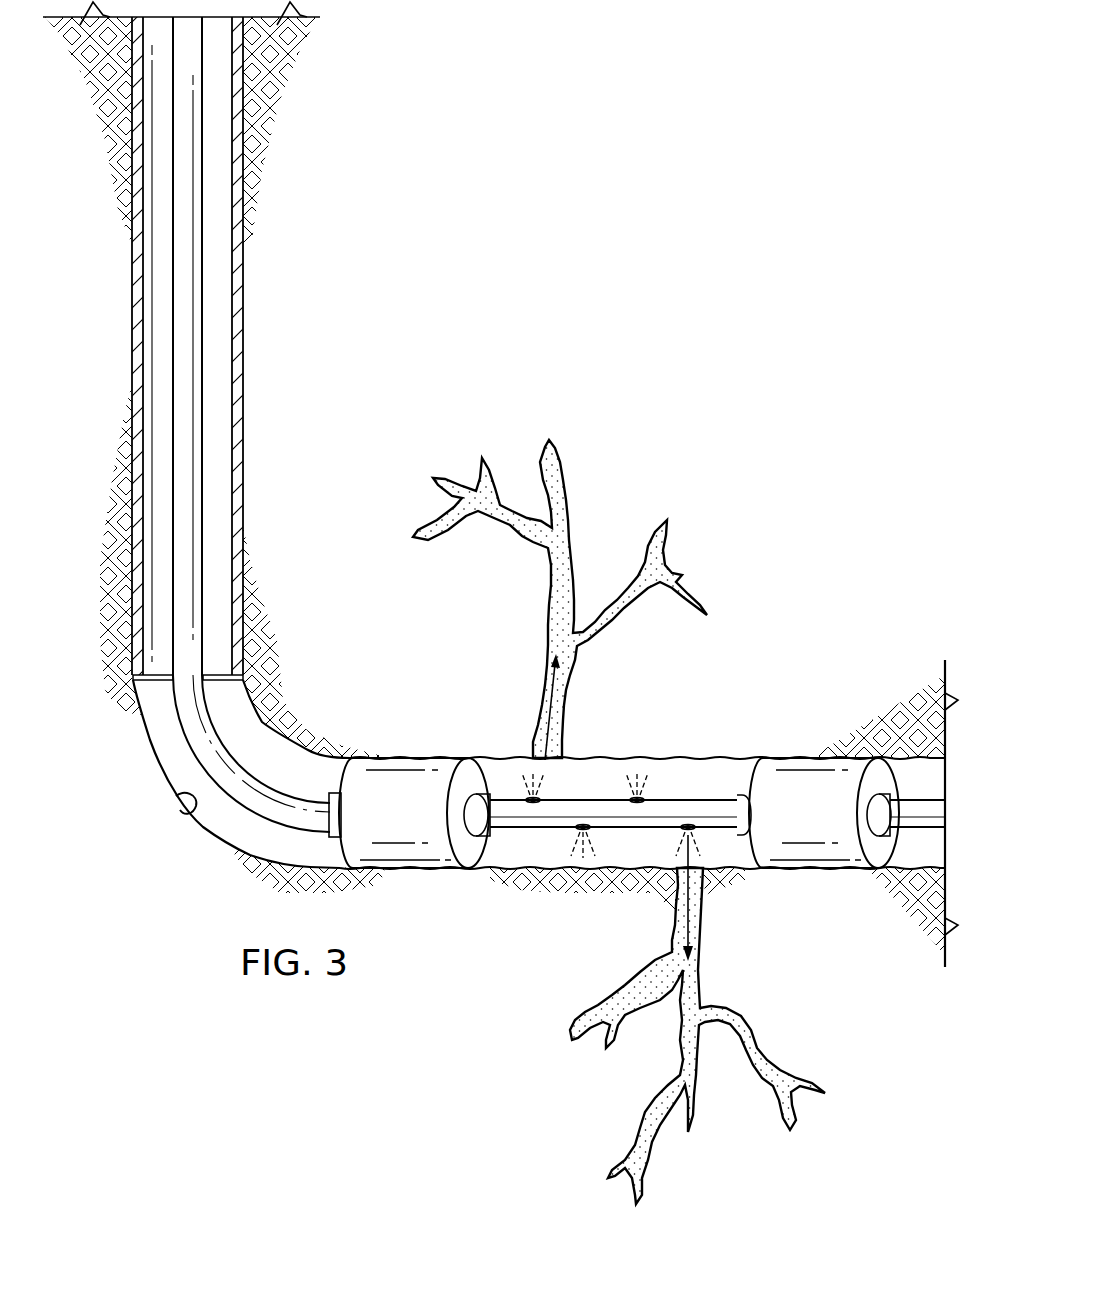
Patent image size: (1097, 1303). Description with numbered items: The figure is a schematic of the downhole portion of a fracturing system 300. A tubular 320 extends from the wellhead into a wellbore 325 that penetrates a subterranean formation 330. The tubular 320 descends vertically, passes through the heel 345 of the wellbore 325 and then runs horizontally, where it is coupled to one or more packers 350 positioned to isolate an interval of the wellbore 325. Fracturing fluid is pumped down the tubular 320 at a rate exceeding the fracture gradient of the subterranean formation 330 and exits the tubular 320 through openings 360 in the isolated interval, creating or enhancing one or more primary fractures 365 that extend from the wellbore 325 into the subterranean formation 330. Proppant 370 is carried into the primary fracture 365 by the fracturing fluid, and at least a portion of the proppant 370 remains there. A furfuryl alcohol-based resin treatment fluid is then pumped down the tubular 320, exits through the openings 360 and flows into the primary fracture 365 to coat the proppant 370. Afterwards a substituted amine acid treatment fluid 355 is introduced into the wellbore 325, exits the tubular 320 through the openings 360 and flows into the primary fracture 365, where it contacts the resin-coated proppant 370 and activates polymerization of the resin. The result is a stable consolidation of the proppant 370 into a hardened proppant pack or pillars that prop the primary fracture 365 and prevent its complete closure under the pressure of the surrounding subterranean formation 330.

The fracturing system 300 is at (584, 281).
The tubular 320 is at (203, 327).
The wellbore 325 is at (237, 265).
The subterranean formation 330 is at (808, 605).
The heel 345 is at (178, 800).
The packers 350 is at (433, 866).
The substituted amine acid treatment fluid 355 is at (552, 795).
The openings 360 is at (689, 816).
The primary fracture 365 is at (544, 716).
The proppant 370 is at (563, 527).